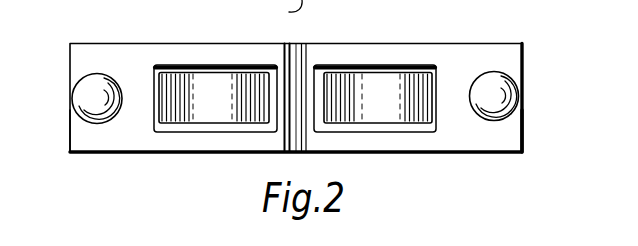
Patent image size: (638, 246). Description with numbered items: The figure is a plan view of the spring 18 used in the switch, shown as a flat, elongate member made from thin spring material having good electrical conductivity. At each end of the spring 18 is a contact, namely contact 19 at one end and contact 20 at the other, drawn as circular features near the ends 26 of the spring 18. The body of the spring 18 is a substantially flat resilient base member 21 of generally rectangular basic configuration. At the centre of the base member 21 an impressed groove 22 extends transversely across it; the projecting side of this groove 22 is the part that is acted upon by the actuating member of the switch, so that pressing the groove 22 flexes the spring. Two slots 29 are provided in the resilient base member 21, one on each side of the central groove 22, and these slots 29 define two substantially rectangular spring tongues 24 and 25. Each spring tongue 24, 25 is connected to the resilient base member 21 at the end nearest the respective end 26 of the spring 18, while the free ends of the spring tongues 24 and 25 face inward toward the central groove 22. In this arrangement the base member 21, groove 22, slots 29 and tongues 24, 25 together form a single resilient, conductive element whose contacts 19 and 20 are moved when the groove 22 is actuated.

The spring 18 is at (421, 53).
The contact 19 is at (90, 92).
The contact 20 is at (504, 96).
The resilient base member 21 is at (217, 53).
The impressed groove 22 is at (297, 63).
The spring tongue 24 is at (203, 106).
The spring tongue 25 is at (413, 103).
The ends of the spring 26 is at (70, 133).
The slots 29 is at (258, 131).